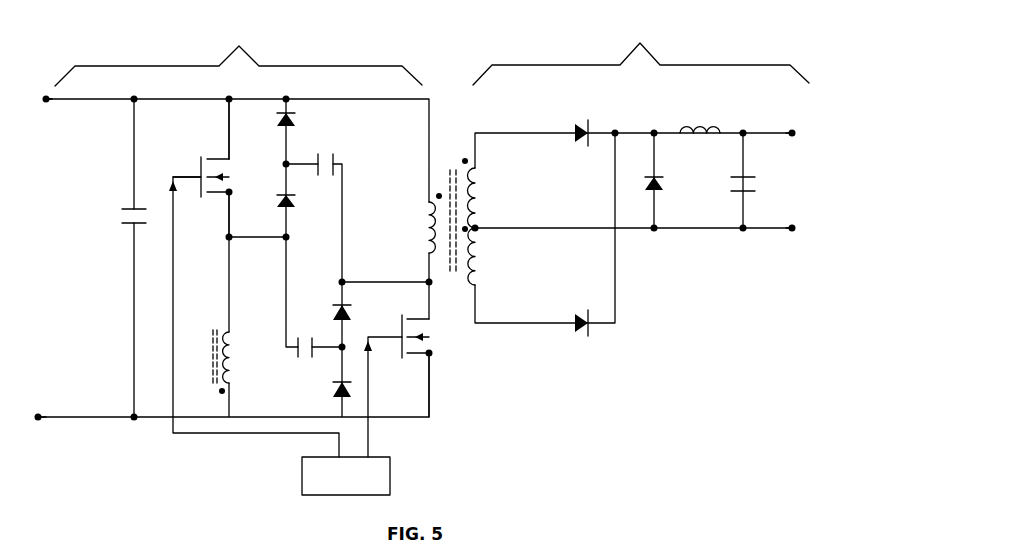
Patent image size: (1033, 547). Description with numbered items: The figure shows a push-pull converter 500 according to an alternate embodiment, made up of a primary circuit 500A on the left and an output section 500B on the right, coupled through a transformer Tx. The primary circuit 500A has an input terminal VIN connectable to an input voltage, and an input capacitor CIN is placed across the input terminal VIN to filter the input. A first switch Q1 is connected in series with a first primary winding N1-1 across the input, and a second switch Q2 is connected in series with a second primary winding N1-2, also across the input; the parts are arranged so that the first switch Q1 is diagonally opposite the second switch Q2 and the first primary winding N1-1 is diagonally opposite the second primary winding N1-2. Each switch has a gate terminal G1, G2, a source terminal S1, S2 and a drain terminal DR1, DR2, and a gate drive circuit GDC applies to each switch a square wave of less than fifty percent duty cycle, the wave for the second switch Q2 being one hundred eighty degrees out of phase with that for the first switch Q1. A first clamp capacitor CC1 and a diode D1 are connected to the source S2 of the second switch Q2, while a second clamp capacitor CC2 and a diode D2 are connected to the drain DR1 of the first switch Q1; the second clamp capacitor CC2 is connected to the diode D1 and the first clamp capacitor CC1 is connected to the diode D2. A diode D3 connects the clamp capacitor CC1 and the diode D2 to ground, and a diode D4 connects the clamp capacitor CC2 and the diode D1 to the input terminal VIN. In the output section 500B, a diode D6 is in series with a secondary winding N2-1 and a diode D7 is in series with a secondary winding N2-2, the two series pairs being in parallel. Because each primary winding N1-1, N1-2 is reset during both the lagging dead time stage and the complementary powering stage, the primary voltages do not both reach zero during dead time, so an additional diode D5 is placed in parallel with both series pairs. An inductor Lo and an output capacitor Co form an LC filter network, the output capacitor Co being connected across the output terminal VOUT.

The push-pull converter 500 is at (824, 141).
The primary circuit 500A is at (238, 52).
The output section 500B is at (641, 51).
The input terminal VIN is at (42, 258).
The input capacitor CIN is at (119, 228).
The second switch Q2 is at (221, 177).
The drain terminal of second switch DR2 is at (229, 139).
The gate terminal of second switch G2 is at (249, 302).
The source terminal of second switch S2 is at (229, 205).
The diode D1 is at (308, 118).
The diode D2 is at (299, 211).
The first clamp capacitor CC1 is at (346, 157).
The second clamp capacitor CC2 is at (307, 333).
The diode D3 is at (358, 302).
The diode D4 is at (328, 397).
The second primary winding N1-2 is at (246, 362).
The first primary winding N1-1 is at (405, 223).
The transformer Tx is at (454, 190).
The secondary winding N2-1 is at (495, 193).
The secondary winding N2-2 is at (493, 255).
The first switch Q1 is at (433, 336).
The drain terminal of first switch DR1 is at (439, 298).
The gate terminal of first switch G1 is at (383, 386).
The source terminal of first switch S1 is at (432, 395).
The gate drive circuit GDC is at (346, 476).
The diode D6 is at (582, 117).
The diode D7 is at (582, 309).
The additional diode D5 is at (668, 172).
The inductor Lo is at (700, 111).
The output capacitor Co is at (730, 193).
The output terminal VOUT is at (789, 180).